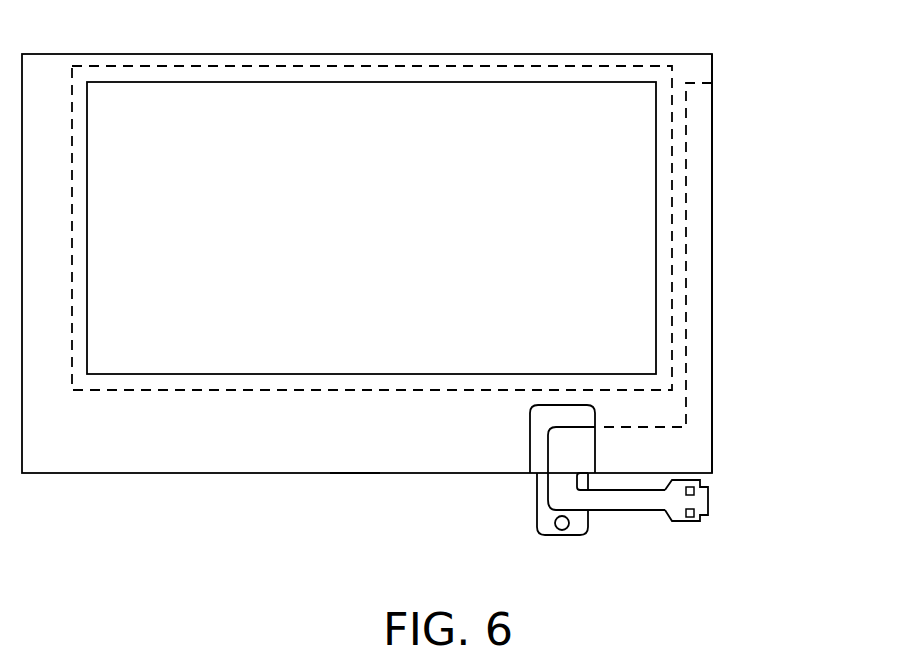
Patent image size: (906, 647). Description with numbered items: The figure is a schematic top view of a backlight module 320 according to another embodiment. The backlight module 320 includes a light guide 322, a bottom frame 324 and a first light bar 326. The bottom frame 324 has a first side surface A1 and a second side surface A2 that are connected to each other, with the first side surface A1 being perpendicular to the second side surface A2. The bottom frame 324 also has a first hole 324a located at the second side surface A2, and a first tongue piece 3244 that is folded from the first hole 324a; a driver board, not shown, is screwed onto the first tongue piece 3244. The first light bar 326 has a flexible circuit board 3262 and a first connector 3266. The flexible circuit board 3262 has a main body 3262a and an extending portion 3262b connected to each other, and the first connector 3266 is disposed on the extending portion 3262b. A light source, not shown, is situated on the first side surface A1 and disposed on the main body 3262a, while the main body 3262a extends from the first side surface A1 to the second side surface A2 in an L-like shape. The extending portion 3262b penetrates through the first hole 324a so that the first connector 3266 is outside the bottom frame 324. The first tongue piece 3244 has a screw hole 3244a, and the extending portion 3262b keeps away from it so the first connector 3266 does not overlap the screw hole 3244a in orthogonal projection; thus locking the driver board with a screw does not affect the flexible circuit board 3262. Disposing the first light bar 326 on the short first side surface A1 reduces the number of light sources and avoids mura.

The backlight module 320 is at (833, 616).
The light guide 322 is at (627, 64).
The bottom frame 324 is at (692, 65).
The first hole 324a is at (530, 438).
The first tongue piece 3244 is at (537, 505).
The screw hole 3244a is at (563, 531).
The first light bar 326 is at (731, 313).
The flexible circuit board 3262 is at (806, 403).
The main body 3262a is at (686, 423).
The extending portion 3262b is at (642, 502).
The first connector 3266 is at (692, 500).
The first side surface A1 is at (722, 126).
The second side surface A2 is at (352, 474).